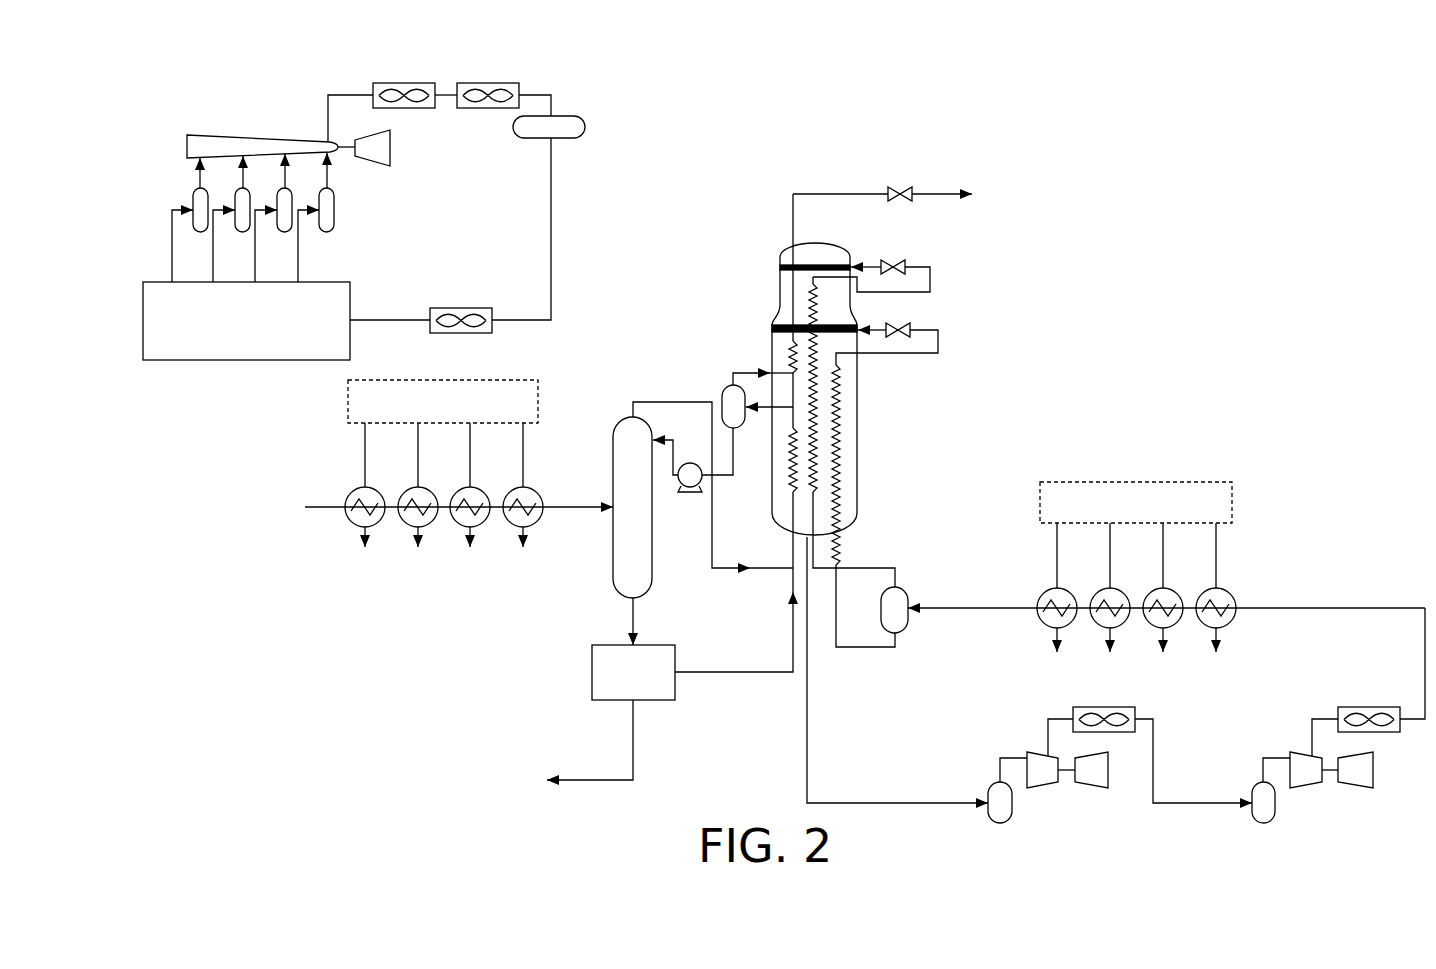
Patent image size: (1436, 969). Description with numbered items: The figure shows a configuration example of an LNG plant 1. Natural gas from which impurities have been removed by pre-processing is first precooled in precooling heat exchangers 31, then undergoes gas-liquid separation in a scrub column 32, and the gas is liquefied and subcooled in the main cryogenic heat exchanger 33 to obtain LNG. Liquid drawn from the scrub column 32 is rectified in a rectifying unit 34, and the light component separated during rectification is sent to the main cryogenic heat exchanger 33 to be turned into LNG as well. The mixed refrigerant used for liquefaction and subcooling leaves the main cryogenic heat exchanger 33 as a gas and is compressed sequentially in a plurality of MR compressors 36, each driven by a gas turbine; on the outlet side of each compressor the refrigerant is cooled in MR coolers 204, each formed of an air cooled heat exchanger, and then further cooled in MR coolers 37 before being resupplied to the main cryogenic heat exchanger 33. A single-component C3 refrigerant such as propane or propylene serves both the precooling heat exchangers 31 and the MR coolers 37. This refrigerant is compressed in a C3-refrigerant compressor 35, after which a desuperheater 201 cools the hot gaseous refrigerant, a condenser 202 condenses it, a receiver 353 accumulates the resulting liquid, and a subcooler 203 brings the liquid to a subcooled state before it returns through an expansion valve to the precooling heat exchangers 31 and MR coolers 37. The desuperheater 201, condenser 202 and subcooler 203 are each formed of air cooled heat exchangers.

The LNG plant 1 is at (1077, 82).
The precooling heat exchangers 31 is at (405, 491).
The scrub column 32 is at (612, 458).
The main cryogenic heat exchanger 33 is at (778, 285).
The rectifying unit 34 is at (592, 672).
The C3-refrigerant compressor 35 is at (258, 135).
The MR compressors 36 is at (1036, 750).
The MR coolers 37 is at (1240, 590).
The desuperheater 201 is at (408, 66).
The condenser 202 is at (493, 82).
The subcooler 203 is at (467, 292).
The MR coolers 204 is at (1378, 690).
The receiver 353 is at (585, 128).